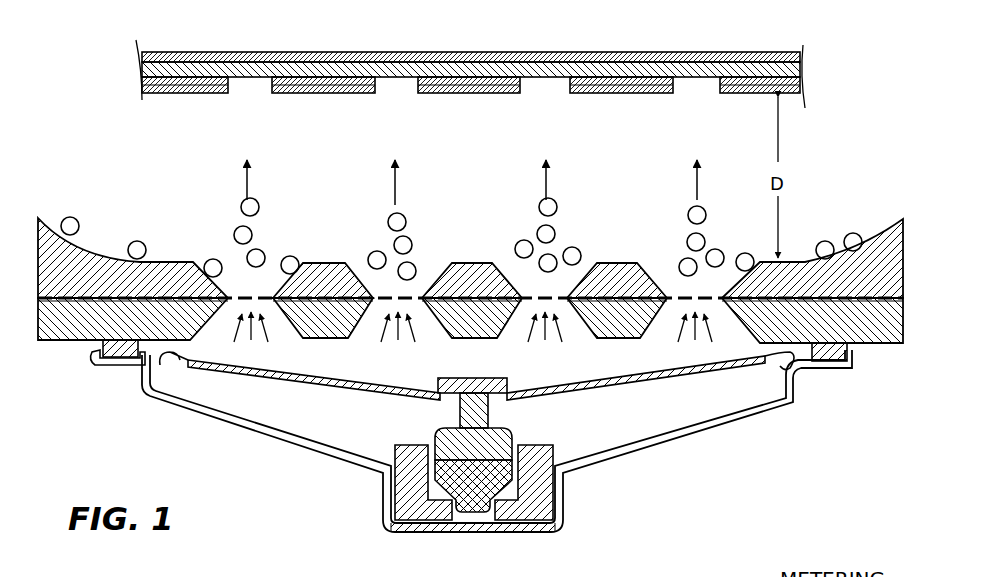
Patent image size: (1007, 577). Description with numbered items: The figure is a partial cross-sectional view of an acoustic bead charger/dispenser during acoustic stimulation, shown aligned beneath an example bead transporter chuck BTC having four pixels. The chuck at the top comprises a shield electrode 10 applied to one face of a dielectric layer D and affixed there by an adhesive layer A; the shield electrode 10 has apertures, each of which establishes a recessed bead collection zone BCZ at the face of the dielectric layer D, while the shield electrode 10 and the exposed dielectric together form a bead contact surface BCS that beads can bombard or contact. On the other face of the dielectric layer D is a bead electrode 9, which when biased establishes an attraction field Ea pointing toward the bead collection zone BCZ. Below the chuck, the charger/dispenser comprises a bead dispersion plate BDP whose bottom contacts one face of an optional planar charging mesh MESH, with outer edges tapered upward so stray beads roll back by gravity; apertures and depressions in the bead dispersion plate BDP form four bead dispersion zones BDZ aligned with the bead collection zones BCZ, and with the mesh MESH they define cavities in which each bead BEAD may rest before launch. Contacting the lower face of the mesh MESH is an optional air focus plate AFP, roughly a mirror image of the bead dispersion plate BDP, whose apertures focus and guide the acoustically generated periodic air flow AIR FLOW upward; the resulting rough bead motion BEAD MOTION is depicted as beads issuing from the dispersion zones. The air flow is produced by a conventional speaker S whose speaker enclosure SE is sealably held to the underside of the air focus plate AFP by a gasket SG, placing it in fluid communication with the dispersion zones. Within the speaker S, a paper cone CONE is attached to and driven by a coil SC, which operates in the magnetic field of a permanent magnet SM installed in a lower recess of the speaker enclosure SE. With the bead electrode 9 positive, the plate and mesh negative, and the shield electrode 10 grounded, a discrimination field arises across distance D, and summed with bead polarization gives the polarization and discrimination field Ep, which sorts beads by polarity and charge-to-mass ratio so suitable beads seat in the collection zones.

The bead electrode 9 is at (448, 57).
The shield electrode 10 is at (476, 94).
The dielectric layer D is at (142, 64).
The adhesive layer A is at (142, 80).
The bead transporter chuck BTC is at (815, 68).
The bead collection zone BCZ is at (258, 84).
The bead contact surface BCS is at (224, 100).
The attraction field Ea is at (700, 98).
The polarization and discrimination field Ep is at (622, 258).
The bead BEAD is at (72, 216).
The bead dispersion zone BDZ is at (270, 287).
The charging mesh MESH is at (373, 297).
The bead motion BEAD MOTION is at (397, 190).
The bead dispersion plate BDP is at (885, 248).
The periodic air flow AIR FLOW is at (473, 339).
The gasket SG is at (115, 358).
The paper cone CONE is at (236, 372).
The permanent magnet SM is at (408, 445).
The coil SC is at (502, 432).
The speaker enclosure SE is at (770, 410).
The speaker S is at (660, 456).
The air focus plate AFP is at (875, 345).